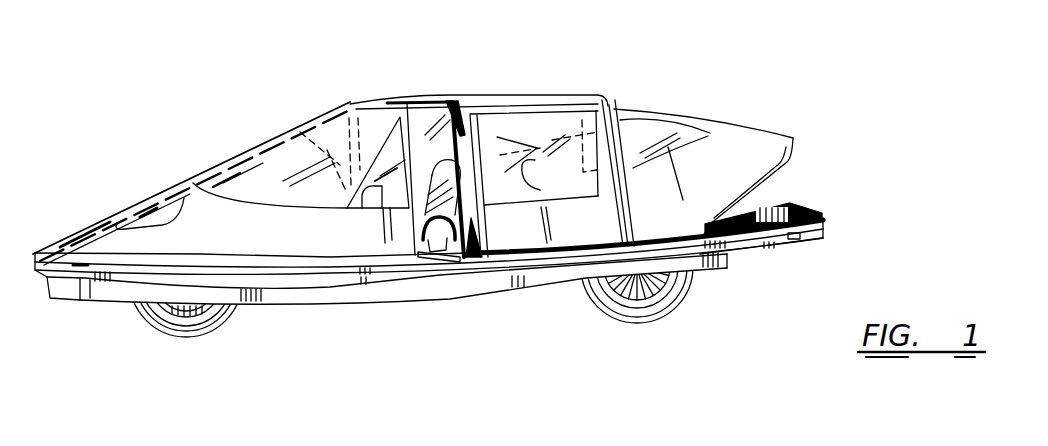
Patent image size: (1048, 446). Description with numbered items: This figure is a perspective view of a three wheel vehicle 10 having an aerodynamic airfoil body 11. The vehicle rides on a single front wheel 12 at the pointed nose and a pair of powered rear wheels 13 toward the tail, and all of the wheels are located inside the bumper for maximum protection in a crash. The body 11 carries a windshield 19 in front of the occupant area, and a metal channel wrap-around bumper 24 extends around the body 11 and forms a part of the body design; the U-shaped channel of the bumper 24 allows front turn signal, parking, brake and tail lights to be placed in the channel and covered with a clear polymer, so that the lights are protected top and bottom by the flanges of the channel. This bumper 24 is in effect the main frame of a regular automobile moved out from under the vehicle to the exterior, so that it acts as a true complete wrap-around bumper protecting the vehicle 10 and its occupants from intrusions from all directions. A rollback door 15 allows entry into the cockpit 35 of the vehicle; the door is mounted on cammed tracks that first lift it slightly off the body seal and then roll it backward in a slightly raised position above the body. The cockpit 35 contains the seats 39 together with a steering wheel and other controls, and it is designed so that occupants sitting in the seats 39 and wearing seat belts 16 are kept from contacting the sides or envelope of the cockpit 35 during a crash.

The three wheel vehicle 10 is at (681, 98).
The aerodynamic airfoil body 11 is at (184, 195).
The front wheel 12 is at (203, 331).
The powered rear wheels 13 is at (650, 316).
The rollback door 15 is at (545, 96).
The seat belts 16 is at (448, 252).
The windshield 19 is at (313, 135).
The wrap-around bumper 24 is at (462, 271).
The cockpit 35 is at (426, 122).
The seats 39 is at (436, 160).